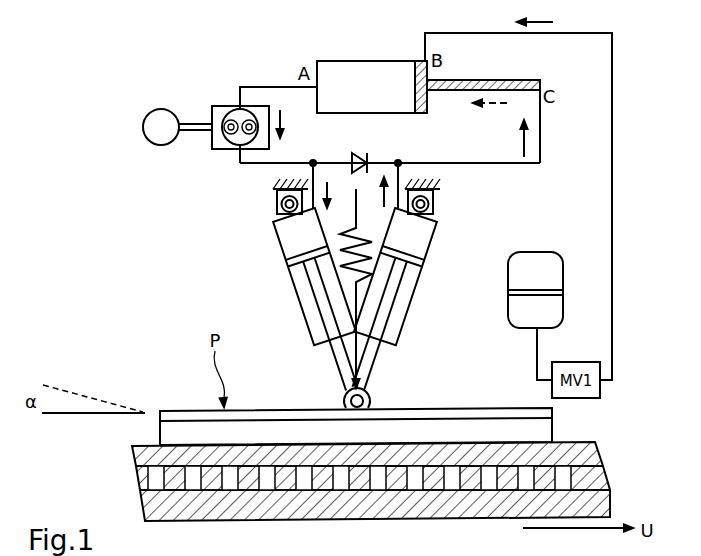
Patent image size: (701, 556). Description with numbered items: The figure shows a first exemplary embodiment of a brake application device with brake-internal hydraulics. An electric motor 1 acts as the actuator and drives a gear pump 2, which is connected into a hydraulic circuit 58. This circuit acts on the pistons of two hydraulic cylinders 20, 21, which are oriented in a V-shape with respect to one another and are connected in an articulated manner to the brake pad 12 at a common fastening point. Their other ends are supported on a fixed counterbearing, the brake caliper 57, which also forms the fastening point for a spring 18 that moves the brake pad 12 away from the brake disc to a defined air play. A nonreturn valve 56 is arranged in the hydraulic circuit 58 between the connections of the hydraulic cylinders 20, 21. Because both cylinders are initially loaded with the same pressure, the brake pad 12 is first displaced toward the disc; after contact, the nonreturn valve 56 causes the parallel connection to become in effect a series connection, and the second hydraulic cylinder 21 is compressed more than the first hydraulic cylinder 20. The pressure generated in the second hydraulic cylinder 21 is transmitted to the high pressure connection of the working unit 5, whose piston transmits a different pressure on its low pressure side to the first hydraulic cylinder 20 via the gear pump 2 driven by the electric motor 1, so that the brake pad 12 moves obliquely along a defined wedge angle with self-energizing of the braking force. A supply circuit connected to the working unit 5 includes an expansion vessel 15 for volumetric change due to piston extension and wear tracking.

The electric motor 1 is at (158, 109).
The gear pump 2 is at (218, 106).
The working unit 5 is at (345, 61).
The brake pad 12 is at (440, 400).
The expansion vessel 15 is at (537, 251).
The spring 18 is at (367, 224).
The first hydraulic cylinder 20 is at (292, 285).
The second hydraulic cylinder 21 is at (419, 285).
The nonreturn valve 56 is at (350, 157).
The brake caliper 57 is at (440, 186).
The hydraulic circuit 58 is at (549, 125).